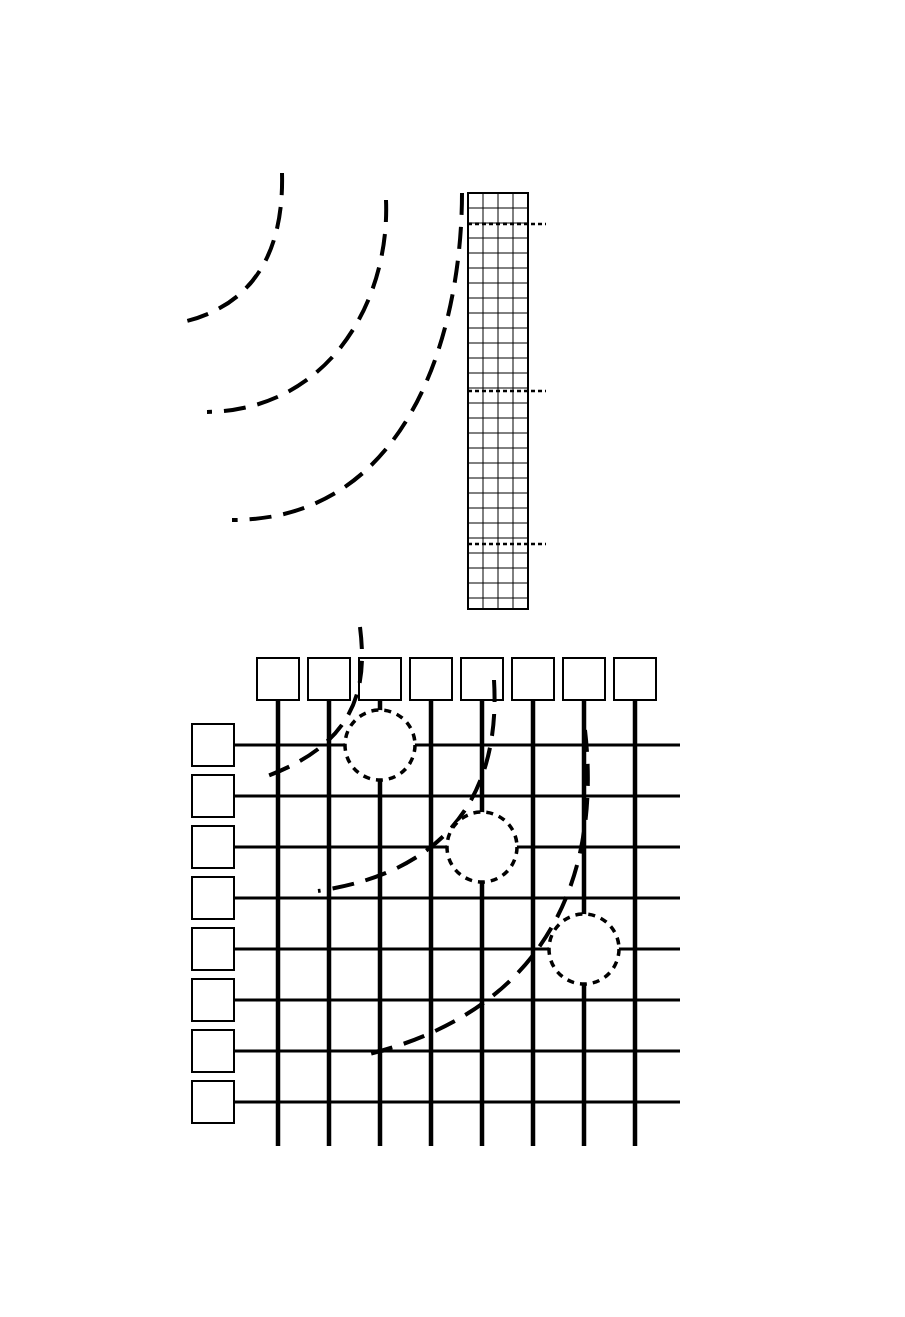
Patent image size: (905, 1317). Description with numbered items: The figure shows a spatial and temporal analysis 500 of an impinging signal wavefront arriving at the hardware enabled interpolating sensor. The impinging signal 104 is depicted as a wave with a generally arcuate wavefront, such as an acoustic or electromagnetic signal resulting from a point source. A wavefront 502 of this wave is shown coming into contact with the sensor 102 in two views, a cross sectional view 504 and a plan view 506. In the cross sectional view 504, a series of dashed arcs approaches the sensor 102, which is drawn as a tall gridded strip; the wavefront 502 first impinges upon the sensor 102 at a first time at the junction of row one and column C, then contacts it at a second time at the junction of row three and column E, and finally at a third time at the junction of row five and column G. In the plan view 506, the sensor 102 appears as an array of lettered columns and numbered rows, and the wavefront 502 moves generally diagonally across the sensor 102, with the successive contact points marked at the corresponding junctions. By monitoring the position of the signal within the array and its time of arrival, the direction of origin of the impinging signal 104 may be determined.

The spatial and temporal analysis 500 is at (700, 74).
The cross sectional view 504 is at (221, 114).
The hardware enabled interpolating sensor 102 is at (500, 224).
The impinging signal 104 is at (215, 247).
The wavefront 502 is at (705, 793).
The plan view 506 is at (222, 604).